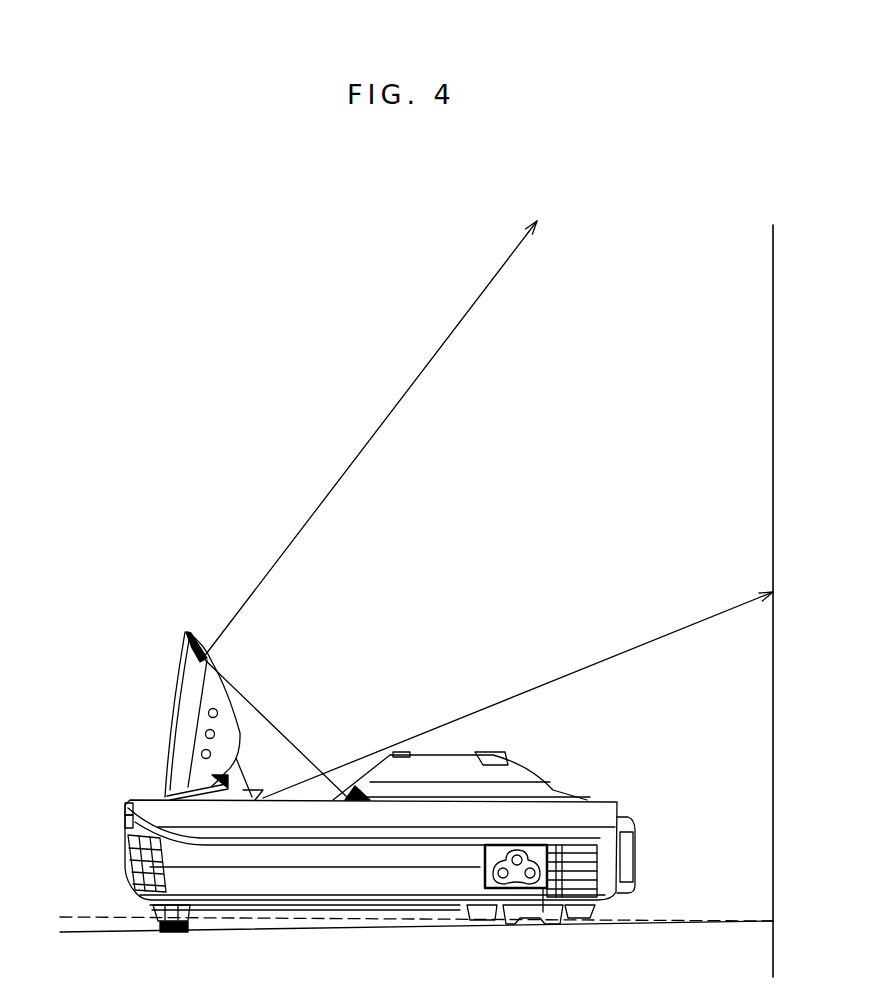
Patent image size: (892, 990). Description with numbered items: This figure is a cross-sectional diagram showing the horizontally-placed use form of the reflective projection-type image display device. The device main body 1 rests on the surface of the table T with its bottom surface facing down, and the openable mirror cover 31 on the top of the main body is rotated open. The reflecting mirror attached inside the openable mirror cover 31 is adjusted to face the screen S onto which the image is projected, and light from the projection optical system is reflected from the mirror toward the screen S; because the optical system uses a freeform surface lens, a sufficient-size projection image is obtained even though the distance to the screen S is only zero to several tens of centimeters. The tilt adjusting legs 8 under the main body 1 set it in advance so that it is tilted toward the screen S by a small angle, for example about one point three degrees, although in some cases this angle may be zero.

The main body 1 is at (603, 800).
The tilt adjusting legs 8 is at (155, 928).
The openable mirror cover 31 is at (182, 700).
The screen S is at (773, 685).
The table T is at (118, 945).